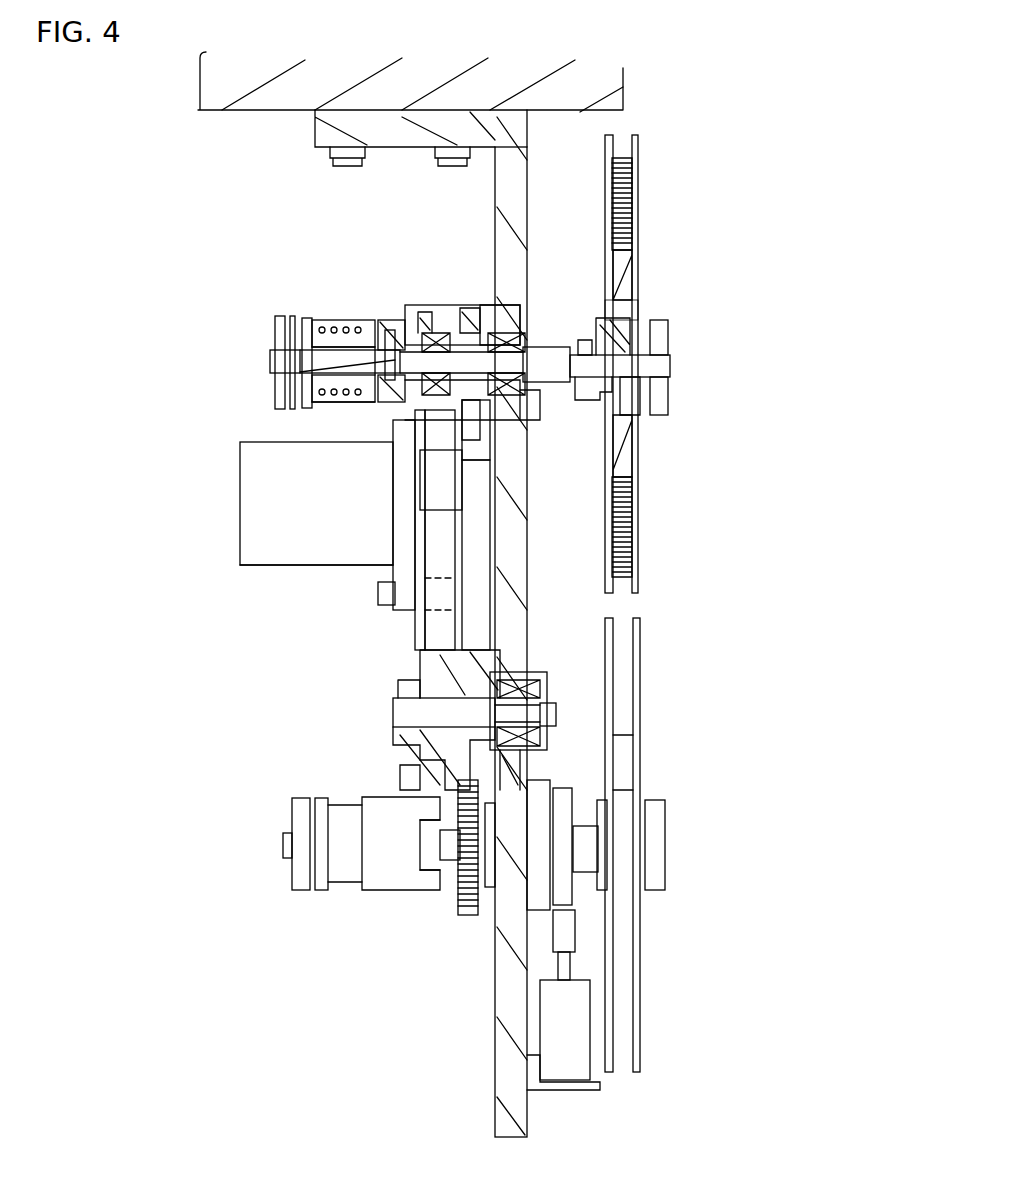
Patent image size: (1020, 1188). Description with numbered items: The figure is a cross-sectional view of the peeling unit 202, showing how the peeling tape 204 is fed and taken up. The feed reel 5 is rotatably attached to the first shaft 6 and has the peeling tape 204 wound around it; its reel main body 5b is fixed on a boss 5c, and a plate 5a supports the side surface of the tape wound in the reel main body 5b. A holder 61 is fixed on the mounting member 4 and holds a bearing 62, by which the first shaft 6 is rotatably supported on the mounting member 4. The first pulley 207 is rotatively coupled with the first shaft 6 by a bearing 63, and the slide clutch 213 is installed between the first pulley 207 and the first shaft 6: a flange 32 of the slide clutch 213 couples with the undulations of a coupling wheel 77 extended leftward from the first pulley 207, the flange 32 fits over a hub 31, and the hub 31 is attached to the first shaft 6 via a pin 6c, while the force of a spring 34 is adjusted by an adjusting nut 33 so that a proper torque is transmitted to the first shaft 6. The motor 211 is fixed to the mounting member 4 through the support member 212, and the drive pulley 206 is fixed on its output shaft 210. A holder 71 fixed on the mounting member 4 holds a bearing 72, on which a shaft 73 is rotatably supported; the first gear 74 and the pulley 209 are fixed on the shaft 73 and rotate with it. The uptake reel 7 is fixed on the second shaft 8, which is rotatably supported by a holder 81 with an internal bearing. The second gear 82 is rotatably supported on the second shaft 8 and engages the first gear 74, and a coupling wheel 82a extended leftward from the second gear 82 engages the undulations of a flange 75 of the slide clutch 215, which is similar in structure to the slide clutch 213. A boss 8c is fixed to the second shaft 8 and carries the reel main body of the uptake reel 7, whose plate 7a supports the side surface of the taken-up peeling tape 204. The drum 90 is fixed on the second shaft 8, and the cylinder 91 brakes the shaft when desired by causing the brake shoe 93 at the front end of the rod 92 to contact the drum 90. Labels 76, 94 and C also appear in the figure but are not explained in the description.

The mounting member 4 is at (500, 213).
The feed reel 5 is at (633, 364).
The plate 5a is at (640, 160).
The reel main body 5b is at (605, 255).
The boss 5c is at (640, 318).
The first shaft 6 is at (640, 365).
The pin 6c is at (330, 372).
The uptake reel 7 is at (650, 845).
The plate 7a is at (642, 680).
The second shaft 8 is at (440, 880).
The boss 8c is at (588, 860).
The hub 31 is at (345, 398).
The flange 32 is at (345, 320).
The adjusting nut 33 is at (282, 318).
The spring 34 is at (320, 320).
The holder 61 is at (522, 320).
The bearing 62 is at (520, 395).
The bearing 63 is at (485, 420).
The holder 71 is at (548, 672).
The bearing 72 is at (535, 745).
The shaft 73 is at (395, 712).
The first gear 74 is at (480, 652).
The flange 75 is at (365, 890).
The screw 76 is at (462, 315).
The coupling wheel 77 is at (415, 318).
The holder 81 is at (525, 880).
The second gear 82 is at (468, 915).
The coupling wheel 82a is at (425, 885).
The drum 90 is at (568, 803).
The cylinder 91 is at (578, 1000).
The rod 92 is at (565, 963).
The brake shoe 93 is at (568, 940).
The bracket 94 is at (568, 1092).
The peeling unit 202 is at (752, 407).
The peeling tape 204 is at (608, 160).
The drive pulley 206 is at (475, 480).
The first pulley 207 is at (435, 305).
The pulley 209 is at (395, 740).
The output shaft 210 is at (415, 482).
The motor 211 is at (278, 567).
The support member 212 is at (385, 605).
The slide clutch 213 is at (249, 333).
The slide clutch 215 is at (277, 804).
The clutch C is at (369, 295).